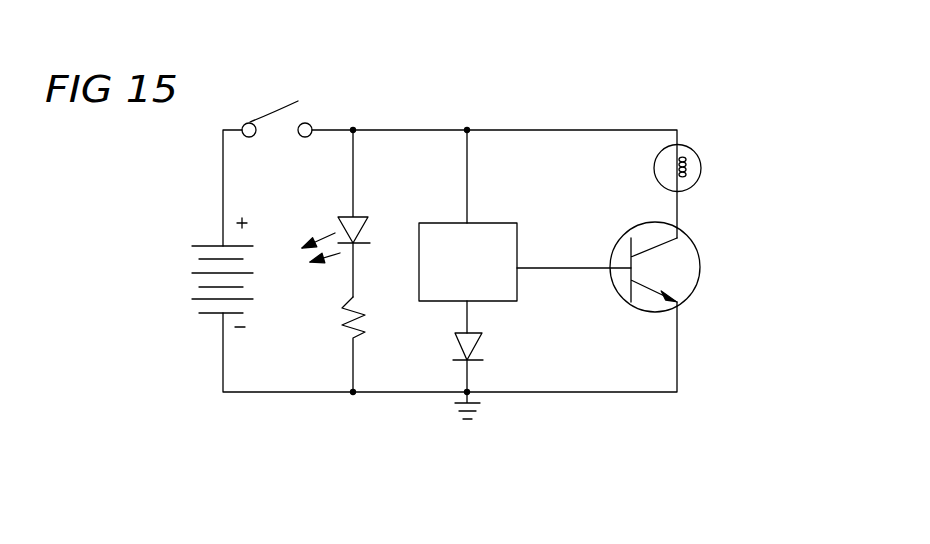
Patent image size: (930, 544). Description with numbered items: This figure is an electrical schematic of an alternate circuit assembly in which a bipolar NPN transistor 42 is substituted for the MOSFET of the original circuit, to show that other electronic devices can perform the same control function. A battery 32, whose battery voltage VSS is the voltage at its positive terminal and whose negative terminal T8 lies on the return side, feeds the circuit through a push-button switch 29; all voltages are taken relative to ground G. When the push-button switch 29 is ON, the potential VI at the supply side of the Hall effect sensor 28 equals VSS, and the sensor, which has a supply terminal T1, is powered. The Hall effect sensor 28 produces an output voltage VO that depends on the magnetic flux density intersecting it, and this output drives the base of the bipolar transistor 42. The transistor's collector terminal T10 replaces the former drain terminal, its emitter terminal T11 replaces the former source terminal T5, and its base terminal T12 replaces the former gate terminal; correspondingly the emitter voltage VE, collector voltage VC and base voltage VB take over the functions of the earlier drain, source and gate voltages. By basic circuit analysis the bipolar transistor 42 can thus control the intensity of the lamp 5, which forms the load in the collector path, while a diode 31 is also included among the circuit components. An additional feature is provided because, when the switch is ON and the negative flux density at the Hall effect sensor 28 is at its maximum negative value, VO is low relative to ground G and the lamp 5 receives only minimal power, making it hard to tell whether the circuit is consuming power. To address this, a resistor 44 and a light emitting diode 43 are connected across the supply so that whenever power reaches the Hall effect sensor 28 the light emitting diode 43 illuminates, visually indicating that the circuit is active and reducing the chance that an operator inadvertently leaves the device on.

The lamp 5 is at (697, 167).
The Hall effect sensor 28 is at (485, 235).
The push-button switch 29 is at (290, 99).
The diode 31 is at (485, 362).
The battery 32 is at (212, 245).
The bipolar NPN transistor 42 is at (673, 275).
The light emitting diode 43 is at (365, 212).
The resistor 44 is at (347, 328).
The ground G is at (458, 403).
The supply terminal T1 is at (223, 195).
The source terminal T5 is at (467, 312).
The negative terminal T8 is at (223, 355).
The collector terminal T10 is at (677, 210).
The emitter terminal T11 is at (677, 323).
The base terminal T12 is at (588, 269).
The battery voltage VSS is at (223, 157).
The input potential VI is at (468, 215).
The emitter voltage VE is at (677, 208).
The collector voltage VC is at (677, 332).
The base voltage VB is at (595, 269).
The output voltage VO is at (530, 269).